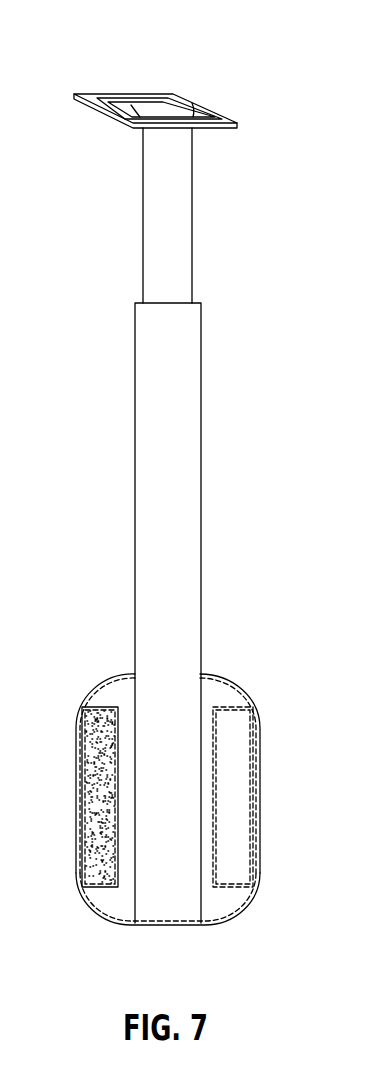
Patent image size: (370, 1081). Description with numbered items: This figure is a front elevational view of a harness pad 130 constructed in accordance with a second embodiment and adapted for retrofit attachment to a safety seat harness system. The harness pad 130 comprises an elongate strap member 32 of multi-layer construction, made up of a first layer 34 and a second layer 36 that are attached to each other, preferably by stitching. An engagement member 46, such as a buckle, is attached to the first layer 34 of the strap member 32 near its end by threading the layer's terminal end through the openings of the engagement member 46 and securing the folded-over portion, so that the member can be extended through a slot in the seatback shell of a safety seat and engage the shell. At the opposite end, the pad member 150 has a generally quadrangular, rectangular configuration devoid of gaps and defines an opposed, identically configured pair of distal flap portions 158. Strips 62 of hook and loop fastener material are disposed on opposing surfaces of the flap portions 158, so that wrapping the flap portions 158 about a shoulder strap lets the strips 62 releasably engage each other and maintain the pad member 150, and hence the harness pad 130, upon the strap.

The harness pad 130 is at (184, 493).
The engagement member 46 is at (155, 93).
The strap member 32 is at (218, 525).
The first layer 34 is at (192, 270).
The second layer 36 is at (200, 452).
The pad member 150 is at (184, 786).
The strips of hook and loop fastener material 62 is at (97, 788).
The distal flap portions 158 is at (95, 917).